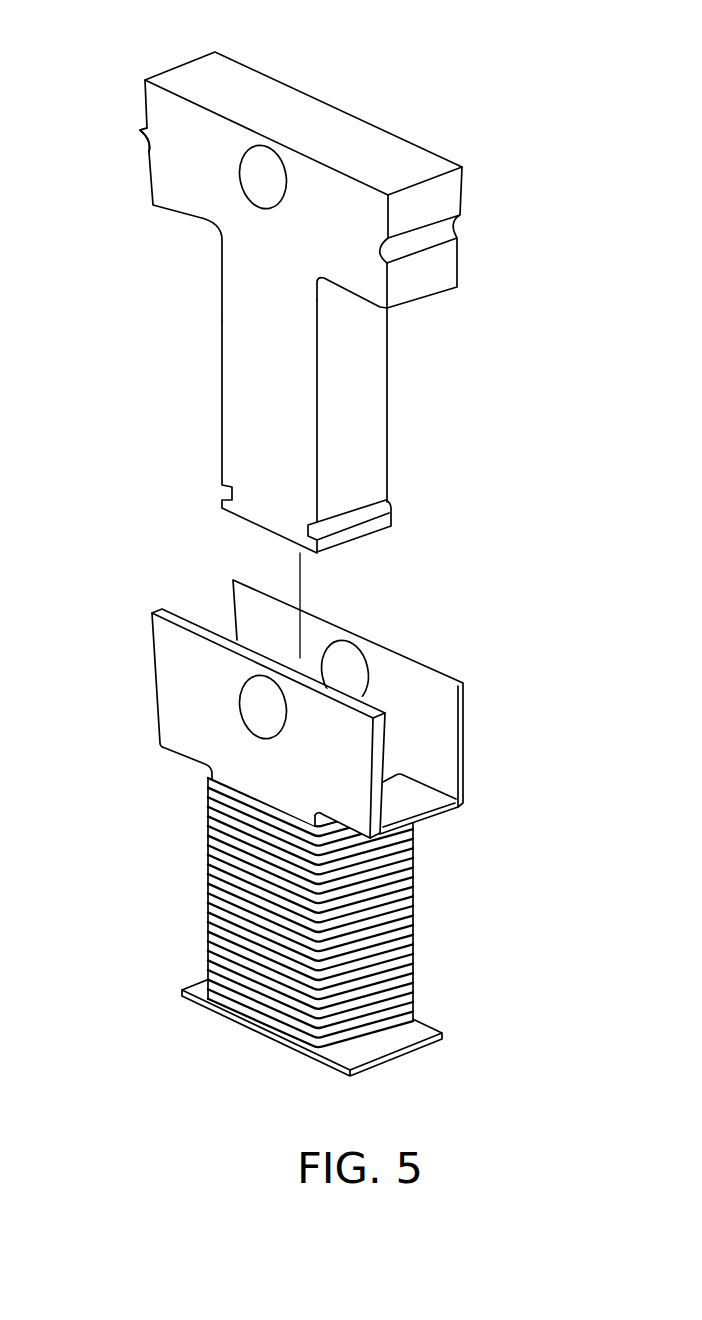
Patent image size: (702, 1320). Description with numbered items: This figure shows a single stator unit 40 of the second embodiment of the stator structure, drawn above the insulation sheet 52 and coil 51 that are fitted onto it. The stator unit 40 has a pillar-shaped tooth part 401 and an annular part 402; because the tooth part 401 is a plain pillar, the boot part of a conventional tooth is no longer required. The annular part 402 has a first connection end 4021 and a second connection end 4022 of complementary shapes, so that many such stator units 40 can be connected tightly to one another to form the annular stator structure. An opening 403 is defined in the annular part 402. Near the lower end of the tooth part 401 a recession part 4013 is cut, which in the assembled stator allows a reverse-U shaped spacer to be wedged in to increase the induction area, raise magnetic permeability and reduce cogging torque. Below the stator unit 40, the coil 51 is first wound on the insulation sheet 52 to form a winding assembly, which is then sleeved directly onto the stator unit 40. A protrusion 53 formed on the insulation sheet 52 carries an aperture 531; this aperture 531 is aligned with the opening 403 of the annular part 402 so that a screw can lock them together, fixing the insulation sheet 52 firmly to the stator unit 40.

The stator unit 40 is at (294, 314).
The tooth part 401 is at (285, 438).
The annular part 402 is at (294, 190).
The first connection end 4021 is at (140, 134).
The second connection end 4022 is at (438, 233).
The opening 403 is at (263, 168).
The recession part 4013 is at (387, 527).
The coil 51 is at (410, 883).
The insulation sheet 52 is at (410, 1035).
The protrusion 53 is at (271, 709).
The aperture 531 is at (263, 705).